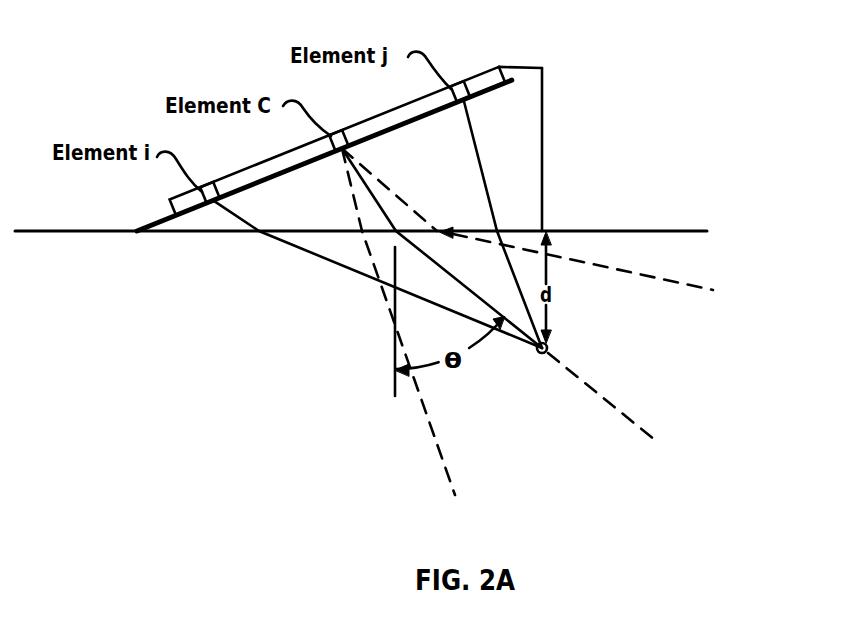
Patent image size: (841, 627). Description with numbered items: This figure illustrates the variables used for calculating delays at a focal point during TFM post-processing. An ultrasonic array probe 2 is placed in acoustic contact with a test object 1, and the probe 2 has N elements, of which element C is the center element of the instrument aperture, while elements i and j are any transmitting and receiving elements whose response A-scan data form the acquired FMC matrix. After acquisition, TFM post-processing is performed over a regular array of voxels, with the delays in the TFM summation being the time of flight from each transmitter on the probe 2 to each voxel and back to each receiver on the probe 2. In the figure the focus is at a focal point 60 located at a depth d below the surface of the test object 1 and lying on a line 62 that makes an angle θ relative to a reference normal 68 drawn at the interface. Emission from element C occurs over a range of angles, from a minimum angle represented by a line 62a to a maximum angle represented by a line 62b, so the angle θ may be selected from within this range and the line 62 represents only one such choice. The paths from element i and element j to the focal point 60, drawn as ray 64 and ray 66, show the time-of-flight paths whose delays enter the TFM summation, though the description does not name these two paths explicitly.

The test object 1 is at (676, 252).
The probe 2 is at (516, 118).
The focal point 60 is at (549, 348).
The line 62 is at (617, 407).
The line 62a is at (432, 423).
The line 62b is at (707, 288).
The ray from element i to focal point 64 is at (311, 256).
The ray from element j to focal point 66 is at (512, 266).
The reference normal 68 is at (394, 374).